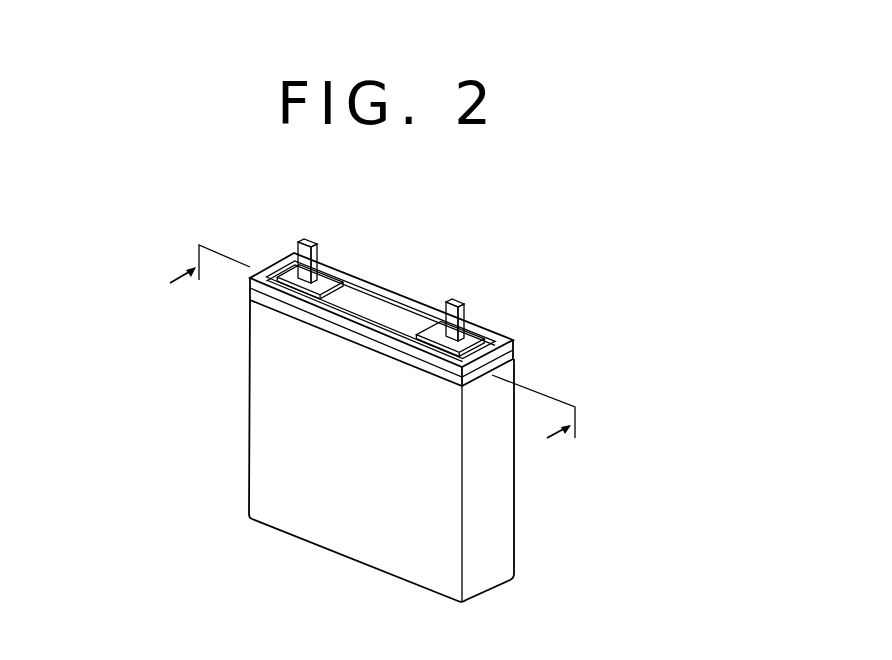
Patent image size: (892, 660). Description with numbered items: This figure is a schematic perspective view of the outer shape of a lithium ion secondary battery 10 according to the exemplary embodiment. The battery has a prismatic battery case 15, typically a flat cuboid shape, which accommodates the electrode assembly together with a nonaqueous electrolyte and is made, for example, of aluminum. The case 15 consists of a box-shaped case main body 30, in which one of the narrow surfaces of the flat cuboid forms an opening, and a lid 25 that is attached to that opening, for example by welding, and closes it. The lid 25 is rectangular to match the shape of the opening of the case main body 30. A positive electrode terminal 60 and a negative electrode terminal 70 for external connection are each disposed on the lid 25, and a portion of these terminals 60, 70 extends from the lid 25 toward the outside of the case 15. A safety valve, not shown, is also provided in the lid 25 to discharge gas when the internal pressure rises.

The lithium ion secondary battery 10 is at (661, 158).
The battery case 15 is at (247, 439).
The lid 25 is at (515, 343).
The case main body 30 is at (502, 543).
The positive electrode terminal 60 is at (310, 240).
The negative electrode terminal 70 is at (458, 300).